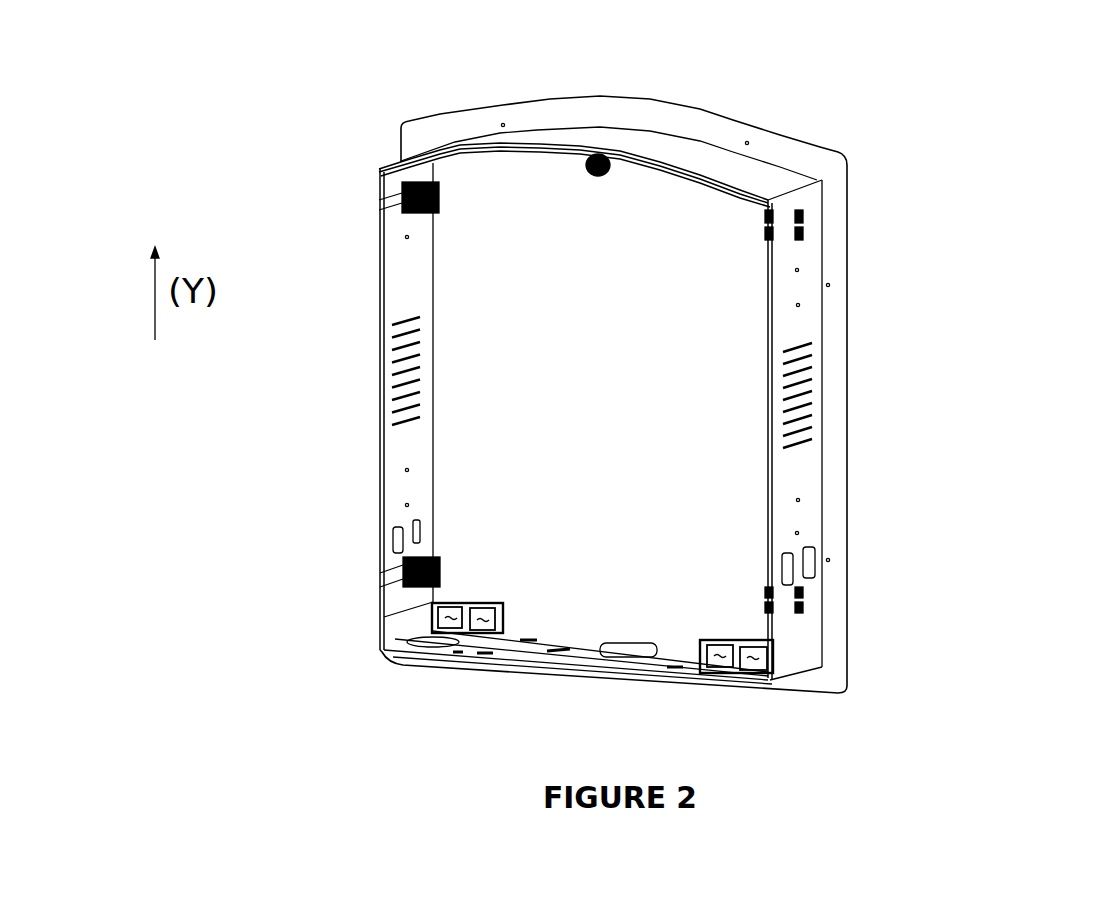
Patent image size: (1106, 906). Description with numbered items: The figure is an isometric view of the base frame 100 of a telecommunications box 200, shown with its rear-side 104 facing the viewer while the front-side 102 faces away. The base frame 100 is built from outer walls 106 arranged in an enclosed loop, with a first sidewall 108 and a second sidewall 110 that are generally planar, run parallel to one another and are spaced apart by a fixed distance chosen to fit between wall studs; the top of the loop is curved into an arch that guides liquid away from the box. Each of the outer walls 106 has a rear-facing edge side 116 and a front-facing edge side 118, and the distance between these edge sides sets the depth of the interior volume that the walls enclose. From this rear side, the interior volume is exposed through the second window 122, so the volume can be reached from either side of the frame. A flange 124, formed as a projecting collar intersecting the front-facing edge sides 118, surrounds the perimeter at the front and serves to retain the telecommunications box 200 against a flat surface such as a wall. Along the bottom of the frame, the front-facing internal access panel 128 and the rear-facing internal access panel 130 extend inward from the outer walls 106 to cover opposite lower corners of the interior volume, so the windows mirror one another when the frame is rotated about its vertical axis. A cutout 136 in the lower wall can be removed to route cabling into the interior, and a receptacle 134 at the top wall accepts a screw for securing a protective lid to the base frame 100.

The base frame 100 is at (948, 395).
The front-side 102 is at (448, 368).
The rear-side 104 is at (359, 294).
The outer walls 106 is at (717, 155).
The first sidewall 108 is at (805, 255).
The second sidewall 110 is at (418, 298).
The rear-facing edge sides 116 is at (380, 438).
The front-facing edge sides 118 is at (433, 443).
The second window 122 is at (450, 253).
The flange 124 is at (838, 197).
The front-facing internal access panel 128 is at (463, 603).
The rear-facing internal access panel 130 is at (728, 640).
The receptacle 134 is at (598, 165).
The cutout 136 is at (617, 657).
The telecommunications box 200 is at (626, 52).